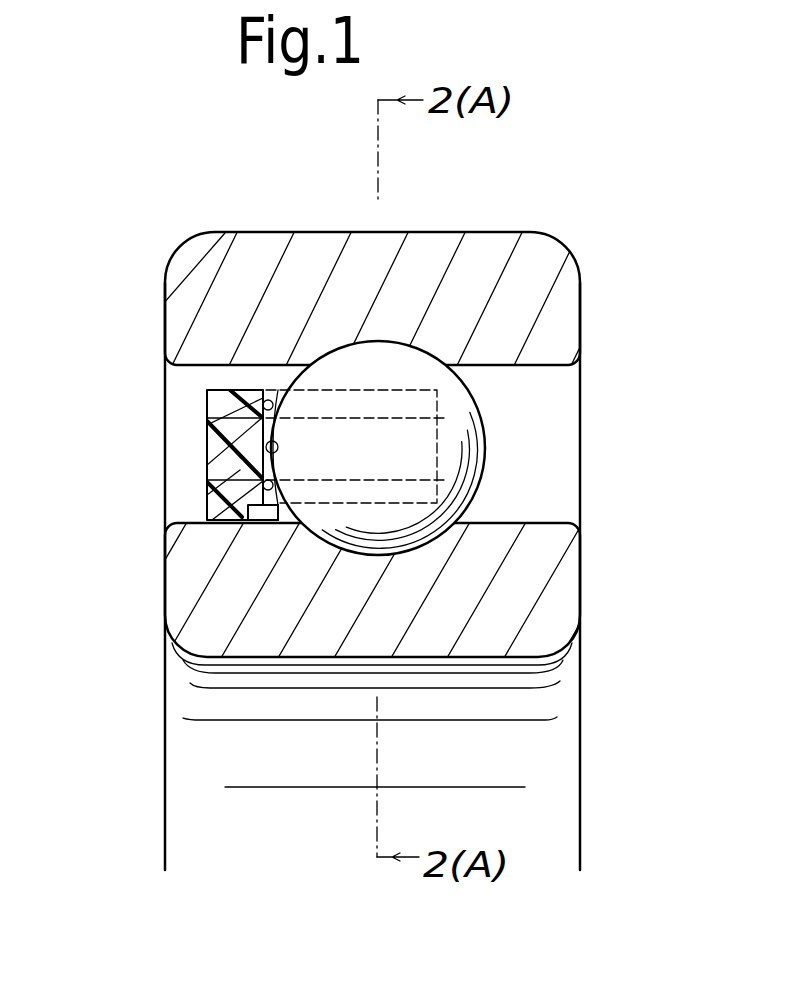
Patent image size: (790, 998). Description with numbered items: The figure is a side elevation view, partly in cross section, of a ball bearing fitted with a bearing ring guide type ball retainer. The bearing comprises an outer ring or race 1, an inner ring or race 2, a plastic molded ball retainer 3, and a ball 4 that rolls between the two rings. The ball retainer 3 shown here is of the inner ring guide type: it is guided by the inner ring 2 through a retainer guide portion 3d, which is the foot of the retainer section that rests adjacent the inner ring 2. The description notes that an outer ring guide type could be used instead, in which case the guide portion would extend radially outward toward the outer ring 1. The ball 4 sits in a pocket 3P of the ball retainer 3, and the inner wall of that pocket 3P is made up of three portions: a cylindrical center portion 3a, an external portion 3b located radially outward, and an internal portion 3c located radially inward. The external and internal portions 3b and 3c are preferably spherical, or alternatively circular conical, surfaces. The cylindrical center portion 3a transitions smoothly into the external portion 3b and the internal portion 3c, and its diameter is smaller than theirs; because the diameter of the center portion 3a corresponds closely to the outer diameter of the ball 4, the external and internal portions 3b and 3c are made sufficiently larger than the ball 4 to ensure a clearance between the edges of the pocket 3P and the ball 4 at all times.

The outer ring 1 is at (499, 234).
The inner ring 2 is at (567, 605).
The ball retainer 3 is at (207, 410).
The cylindrical center portion 3a is at (207, 447).
The external portion 3b is at (207, 417).
The internal portion 3c is at (207, 488).
The retainer guide portion 3d is at (256, 523).
The pocket 3P is at (276, 523).
The ball 4 is at (482, 437).